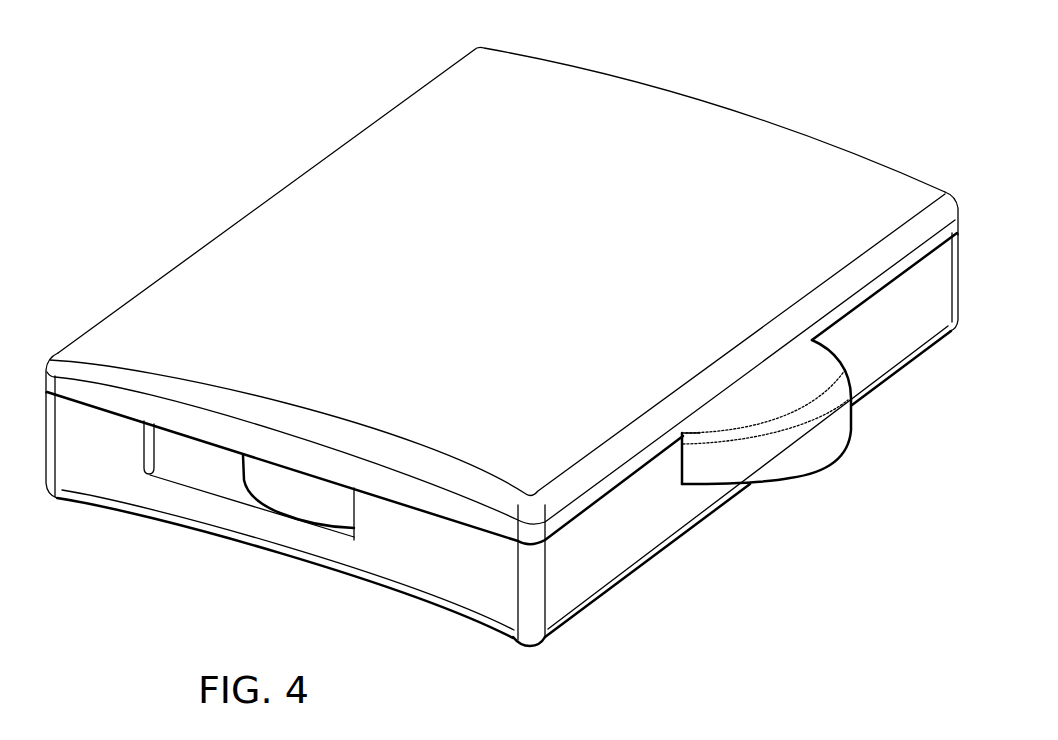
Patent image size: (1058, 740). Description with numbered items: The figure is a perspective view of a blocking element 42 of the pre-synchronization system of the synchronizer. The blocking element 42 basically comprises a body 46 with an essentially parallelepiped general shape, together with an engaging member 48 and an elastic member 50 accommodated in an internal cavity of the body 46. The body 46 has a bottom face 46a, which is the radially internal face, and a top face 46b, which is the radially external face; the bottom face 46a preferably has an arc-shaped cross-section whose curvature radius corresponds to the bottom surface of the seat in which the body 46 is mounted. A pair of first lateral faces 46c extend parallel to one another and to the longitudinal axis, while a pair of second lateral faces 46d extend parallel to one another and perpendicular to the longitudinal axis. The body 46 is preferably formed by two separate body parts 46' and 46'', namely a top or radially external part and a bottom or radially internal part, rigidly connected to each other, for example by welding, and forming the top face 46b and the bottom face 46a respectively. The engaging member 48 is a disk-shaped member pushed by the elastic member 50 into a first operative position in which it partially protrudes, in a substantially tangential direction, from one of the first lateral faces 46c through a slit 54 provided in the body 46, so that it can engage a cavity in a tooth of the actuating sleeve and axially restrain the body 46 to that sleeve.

The blocking element 42 is at (293, 155).
The body 46 is at (502, 345).
The top body part 46' is at (502, 276).
The bottom body part 46'' is at (502, 457).
The bottom face 46a is at (405, 598).
The top face 46b is at (627, 128).
The first lateral faces 46c is at (662, 500).
The second lateral faces 46d is at (110, 457).
The engaging member 48 is at (832, 440).
The elastic member 50 is at (305, 495).
The slit 54 is at (683, 460).